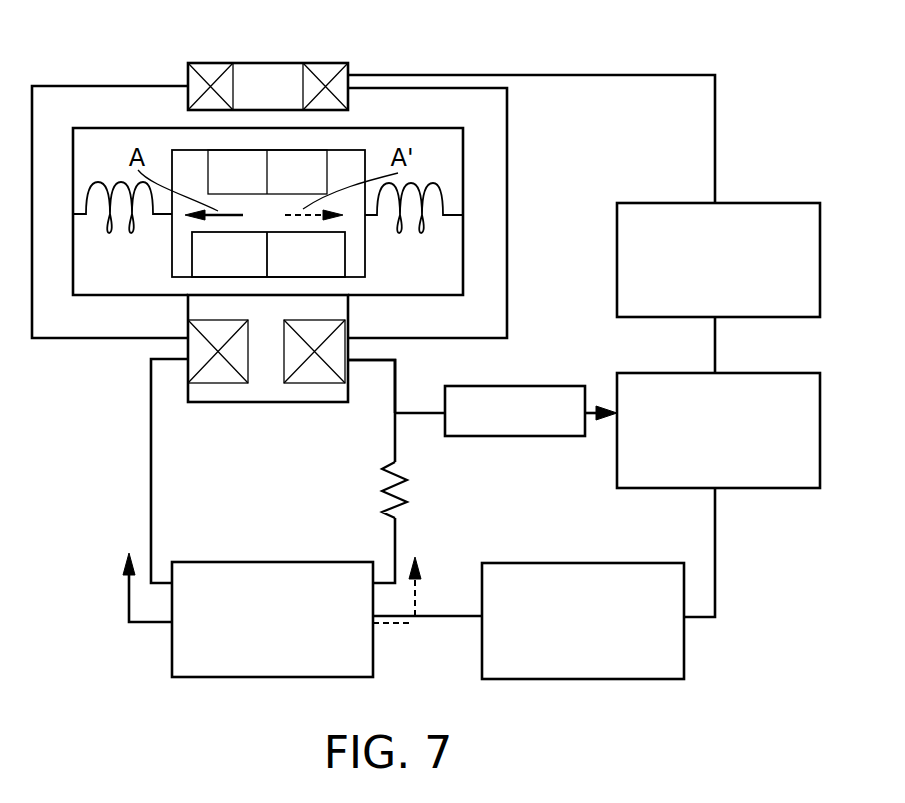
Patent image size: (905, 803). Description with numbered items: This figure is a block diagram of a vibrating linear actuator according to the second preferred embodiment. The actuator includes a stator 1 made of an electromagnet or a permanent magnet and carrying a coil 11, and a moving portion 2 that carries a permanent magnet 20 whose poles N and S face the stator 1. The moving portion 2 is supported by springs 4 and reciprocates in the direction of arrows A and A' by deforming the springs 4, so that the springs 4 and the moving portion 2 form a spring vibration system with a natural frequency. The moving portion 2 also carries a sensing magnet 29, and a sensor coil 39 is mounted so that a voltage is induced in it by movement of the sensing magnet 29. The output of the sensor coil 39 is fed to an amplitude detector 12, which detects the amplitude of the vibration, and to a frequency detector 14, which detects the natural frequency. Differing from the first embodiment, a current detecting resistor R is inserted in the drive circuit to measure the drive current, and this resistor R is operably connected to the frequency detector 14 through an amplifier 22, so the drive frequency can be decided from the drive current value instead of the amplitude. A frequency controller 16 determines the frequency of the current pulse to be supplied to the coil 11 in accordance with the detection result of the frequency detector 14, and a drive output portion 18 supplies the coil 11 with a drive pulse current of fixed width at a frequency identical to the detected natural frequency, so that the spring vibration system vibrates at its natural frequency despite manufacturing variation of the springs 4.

The sensor coil 39 is at (322, 70).
The sensing magnet 29 is at (310, 153).
The moving portion 2 is at (180, 262).
The permanent magnet 20 is at (328, 258).
The springs 4 is at (422, 232).
The coil 11 is at (218, 376).
The stator 1 is at (330, 393).
The current detecting resistor R is at (408, 485).
The amplifier 22 is at (527, 385).
The amplitude detector 12 is at (823, 308).
The frequency detector 14 is at (823, 477).
The drive output portion 18 is at (375, 668).
The frequency controller 16 is at (686, 670).